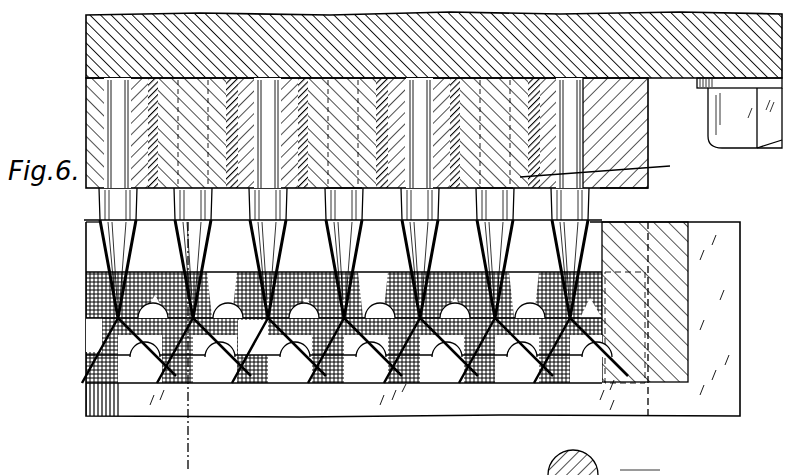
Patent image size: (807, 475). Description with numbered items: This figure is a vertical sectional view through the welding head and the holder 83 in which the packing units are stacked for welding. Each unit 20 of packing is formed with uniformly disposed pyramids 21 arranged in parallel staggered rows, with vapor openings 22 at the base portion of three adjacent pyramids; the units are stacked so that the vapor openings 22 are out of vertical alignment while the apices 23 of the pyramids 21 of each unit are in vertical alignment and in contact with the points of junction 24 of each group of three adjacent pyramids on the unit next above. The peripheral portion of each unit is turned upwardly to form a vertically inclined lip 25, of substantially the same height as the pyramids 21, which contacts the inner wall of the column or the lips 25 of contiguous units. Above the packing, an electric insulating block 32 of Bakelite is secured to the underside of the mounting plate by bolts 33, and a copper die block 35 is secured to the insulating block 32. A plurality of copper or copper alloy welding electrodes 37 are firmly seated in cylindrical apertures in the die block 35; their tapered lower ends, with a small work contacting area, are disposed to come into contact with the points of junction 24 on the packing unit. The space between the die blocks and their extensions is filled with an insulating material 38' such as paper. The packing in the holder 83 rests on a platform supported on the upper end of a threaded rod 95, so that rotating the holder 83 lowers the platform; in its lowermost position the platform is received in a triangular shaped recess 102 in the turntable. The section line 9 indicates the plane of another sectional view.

The section line 9 is at (190, 255).
The unit of packing 20 is at (74, 293).
The pyramids 21 is at (446, 272).
The vapor openings 22 is at (83, 312).
The apices 23 is at (273, 385).
The points of junction 24 is at (326, 272).
The vertically inclined lip 25 is at (167, 268).
The electric insulating block 32 is at (680, 78).
The bolts 33 is at (757, 148).
The die block 35 is at (390, 133).
The welding electrodes 37 is at (404, 250).
The insulating material 38' is at (650, 190).
The holder 83 is at (86, 252).
The rod 95 is at (600, 472).
The triangular shaped recess 102 is at (548, 459).